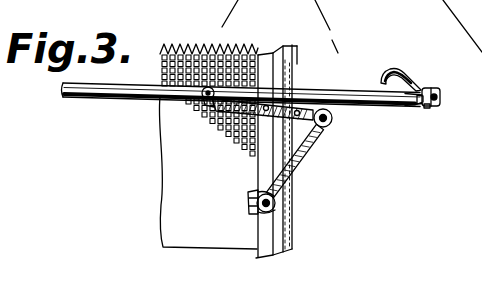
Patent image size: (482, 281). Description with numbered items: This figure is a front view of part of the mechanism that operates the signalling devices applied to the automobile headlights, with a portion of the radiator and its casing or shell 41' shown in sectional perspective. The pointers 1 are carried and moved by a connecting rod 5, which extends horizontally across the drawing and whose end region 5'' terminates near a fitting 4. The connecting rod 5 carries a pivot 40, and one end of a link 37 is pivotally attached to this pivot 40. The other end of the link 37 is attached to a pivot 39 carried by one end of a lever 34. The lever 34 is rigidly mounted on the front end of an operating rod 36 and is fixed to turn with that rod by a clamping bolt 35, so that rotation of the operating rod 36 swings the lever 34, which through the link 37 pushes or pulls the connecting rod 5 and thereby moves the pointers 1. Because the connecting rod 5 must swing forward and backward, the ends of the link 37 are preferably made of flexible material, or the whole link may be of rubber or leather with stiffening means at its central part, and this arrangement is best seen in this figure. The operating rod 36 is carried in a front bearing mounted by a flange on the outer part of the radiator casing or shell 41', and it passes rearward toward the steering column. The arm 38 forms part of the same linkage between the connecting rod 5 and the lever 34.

The pointer 1 is at (417, 87).
The nut 4 is at (435, 88).
The connecting rod 5 is at (242, 104).
The rod end 5'' is at (421, 117).
The lever 34 is at (309, 152).
The clamping bolt 35 is at (251, 205).
The operating rod 36 is at (276, 201).
The link 37 is at (247, 137).
The arm 38 is at (222, 100).
The pivot 39 is at (333, 118).
The pivot 40 is at (204, 98).
The radiator casing or shell 41' is at (276, 137).